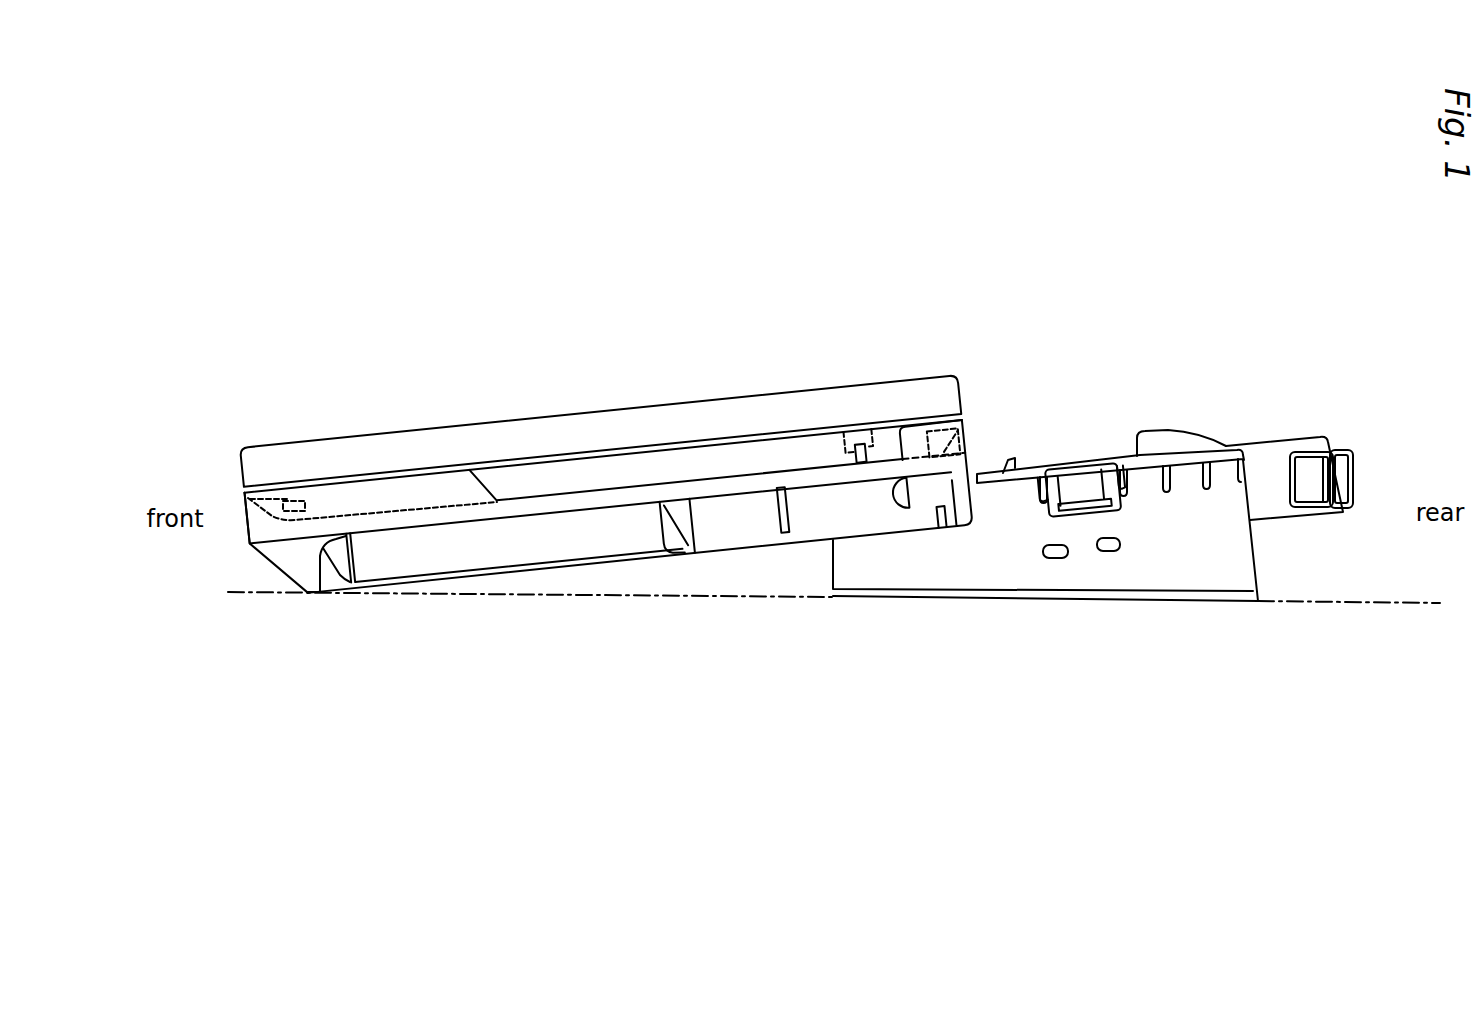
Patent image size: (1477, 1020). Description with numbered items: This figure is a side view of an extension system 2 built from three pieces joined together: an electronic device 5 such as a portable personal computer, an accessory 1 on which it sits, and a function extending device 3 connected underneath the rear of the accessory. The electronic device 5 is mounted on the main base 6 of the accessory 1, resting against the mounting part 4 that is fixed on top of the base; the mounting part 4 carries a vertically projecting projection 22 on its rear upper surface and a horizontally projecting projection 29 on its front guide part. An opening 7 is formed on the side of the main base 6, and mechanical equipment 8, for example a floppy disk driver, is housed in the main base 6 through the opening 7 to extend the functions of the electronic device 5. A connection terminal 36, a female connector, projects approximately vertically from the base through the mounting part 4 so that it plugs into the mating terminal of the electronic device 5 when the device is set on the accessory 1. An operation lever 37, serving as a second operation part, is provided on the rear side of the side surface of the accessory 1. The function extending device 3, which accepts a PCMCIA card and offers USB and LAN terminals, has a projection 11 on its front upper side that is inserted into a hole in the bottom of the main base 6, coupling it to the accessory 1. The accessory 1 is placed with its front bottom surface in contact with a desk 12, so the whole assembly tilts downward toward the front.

The accessory 1 is at (271, 579).
The extension system 2 is at (1043, 427).
The function extending device 3 is at (948, 577).
The mounting part 4 is at (243, 537).
The electronic device 5 is at (601, 424).
The main base 6 is at (303, 568).
The opening 7 is at (635, 557).
The mechanical equipment 8 is at (477, 548).
The projection 11 is at (943, 507).
The desk 12 is at (1278, 604).
The projection 22 is at (968, 428).
The projection 29 is at (283, 498).
The connection terminal 36 is at (861, 463).
The operation lever 37 is at (820, 511).